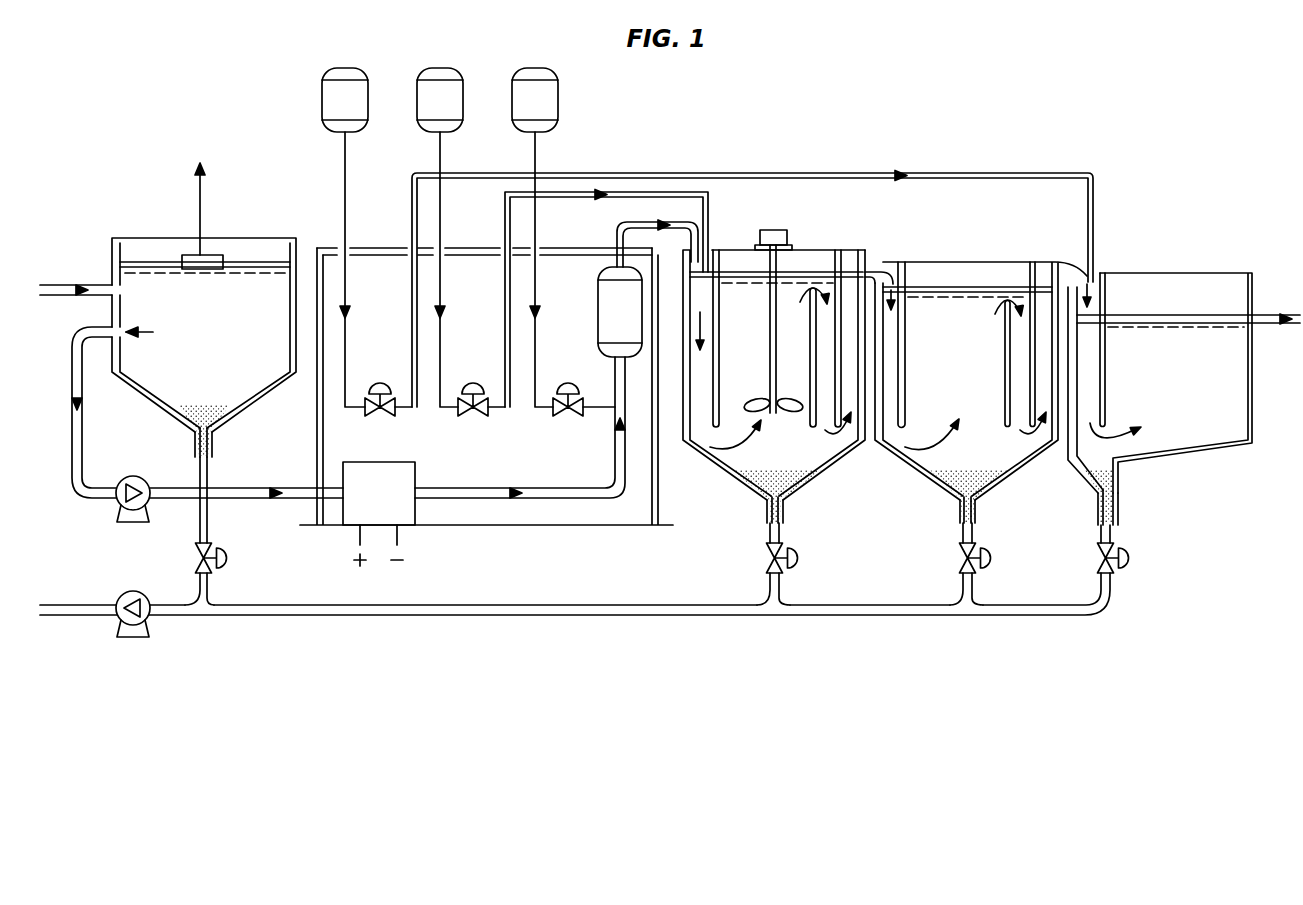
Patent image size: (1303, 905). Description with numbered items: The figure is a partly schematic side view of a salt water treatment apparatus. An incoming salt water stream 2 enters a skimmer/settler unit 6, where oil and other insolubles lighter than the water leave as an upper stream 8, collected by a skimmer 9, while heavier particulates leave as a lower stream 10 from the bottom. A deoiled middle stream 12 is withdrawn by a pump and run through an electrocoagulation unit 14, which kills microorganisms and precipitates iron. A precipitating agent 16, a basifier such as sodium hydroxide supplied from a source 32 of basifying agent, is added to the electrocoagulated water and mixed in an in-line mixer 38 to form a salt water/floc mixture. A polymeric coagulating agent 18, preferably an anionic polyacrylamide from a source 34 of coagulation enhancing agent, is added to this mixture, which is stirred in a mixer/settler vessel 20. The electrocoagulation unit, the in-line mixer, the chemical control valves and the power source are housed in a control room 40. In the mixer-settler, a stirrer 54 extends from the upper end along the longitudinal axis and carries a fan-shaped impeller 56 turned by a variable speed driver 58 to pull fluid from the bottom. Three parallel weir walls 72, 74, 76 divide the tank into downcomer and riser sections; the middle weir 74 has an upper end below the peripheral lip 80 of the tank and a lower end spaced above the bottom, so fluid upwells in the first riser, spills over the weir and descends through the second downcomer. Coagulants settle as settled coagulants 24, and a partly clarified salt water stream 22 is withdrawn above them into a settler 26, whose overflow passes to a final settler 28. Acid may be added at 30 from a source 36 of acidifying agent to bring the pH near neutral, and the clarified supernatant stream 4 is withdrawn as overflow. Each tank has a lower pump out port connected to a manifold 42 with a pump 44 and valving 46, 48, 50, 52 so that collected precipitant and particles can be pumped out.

The incoming salt water stream 2 is at (68, 285).
The supernatant stream 4 is at (1268, 312).
The skimmer/settler unit 6 is at (137, 221).
The upper stream 8 is at (198, 214).
The skimmer 9 is at (220, 255).
The lower stream 10 is at (214, 470).
The middle stream 12 is at (70, 387).
The electrocoagulation unit 14 is at (365, 509).
The precipitating agent 16 is at (600, 412).
The polymeric coagulating agent 18 is at (713, 207).
The mixer/settler vessel 20 is at (838, 489).
The partly clarified salt water stream 22 is at (886, 262).
The settled coagulants 24 is at (760, 487).
The settler 26 is at (992, 246).
The final settler 28 is at (1187, 259).
The acid addition point 30 is at (1095, 211).
The source of basifying agent 32 is at (522, 114).
The source of coagulation enhancing agent 34 is at (427, 114).
The source of acidifying agent 36 is at (332, 114).
The in-line mixer 38 is at (606, 327).
The control room 40 is at (383, 238).
The manifold 42 is at (520, 604).
The pump 44 is at (133, 590).
The valving 46 is at (232, 560).
The valving 48 is at (801, 556).
The valving 50 is at (994, 556).
The valving 52 is at (1131, 557).
The stirrer 54 is at (770, 338).
The fan-shaped impeller 56 is at (791, 410).
The variable speed driver 58 is at (773, 230).
The weir wall 72 is at (719, 337).
The middle weir wall 74 is at (810, 366).
The weir wall 76 is at (846, 262).
The peripheral lip 80 is at (806, 249).